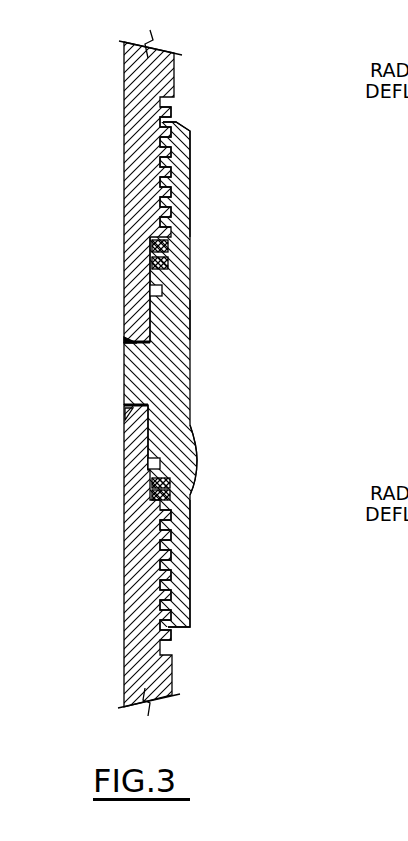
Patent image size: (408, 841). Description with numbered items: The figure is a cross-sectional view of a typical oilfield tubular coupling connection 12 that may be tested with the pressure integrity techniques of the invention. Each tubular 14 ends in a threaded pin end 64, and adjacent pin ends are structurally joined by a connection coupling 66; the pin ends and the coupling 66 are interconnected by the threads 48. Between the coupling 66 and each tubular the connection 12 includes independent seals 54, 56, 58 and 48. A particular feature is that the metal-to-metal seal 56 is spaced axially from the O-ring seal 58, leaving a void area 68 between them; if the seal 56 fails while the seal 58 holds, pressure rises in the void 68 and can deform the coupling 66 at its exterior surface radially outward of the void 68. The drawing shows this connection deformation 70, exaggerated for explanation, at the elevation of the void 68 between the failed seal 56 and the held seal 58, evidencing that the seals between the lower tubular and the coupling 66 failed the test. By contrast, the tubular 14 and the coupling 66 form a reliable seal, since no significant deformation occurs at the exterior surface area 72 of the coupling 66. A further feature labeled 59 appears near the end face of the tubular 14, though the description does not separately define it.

The oilfield tubular coupling connection 12 is at (217, 275).
The tubular 14 is at (138, 78).
The threads 48 is at (190, 197).
The seal 54 is at (137, 336).
The metal-to-metal seal 56 is at (130, 432).
The O-ring seal 58 is at (172, 250).
The wedge 59 is at (135, 345).
The threaded pin end 64 is at (140, 160).
The connection coupling 66 is at (176, 363).
The void area 68 is at (150, 290).
The connection deformation 70 is at (197, 461).
The exterior surface area 72 is at (190, 320).